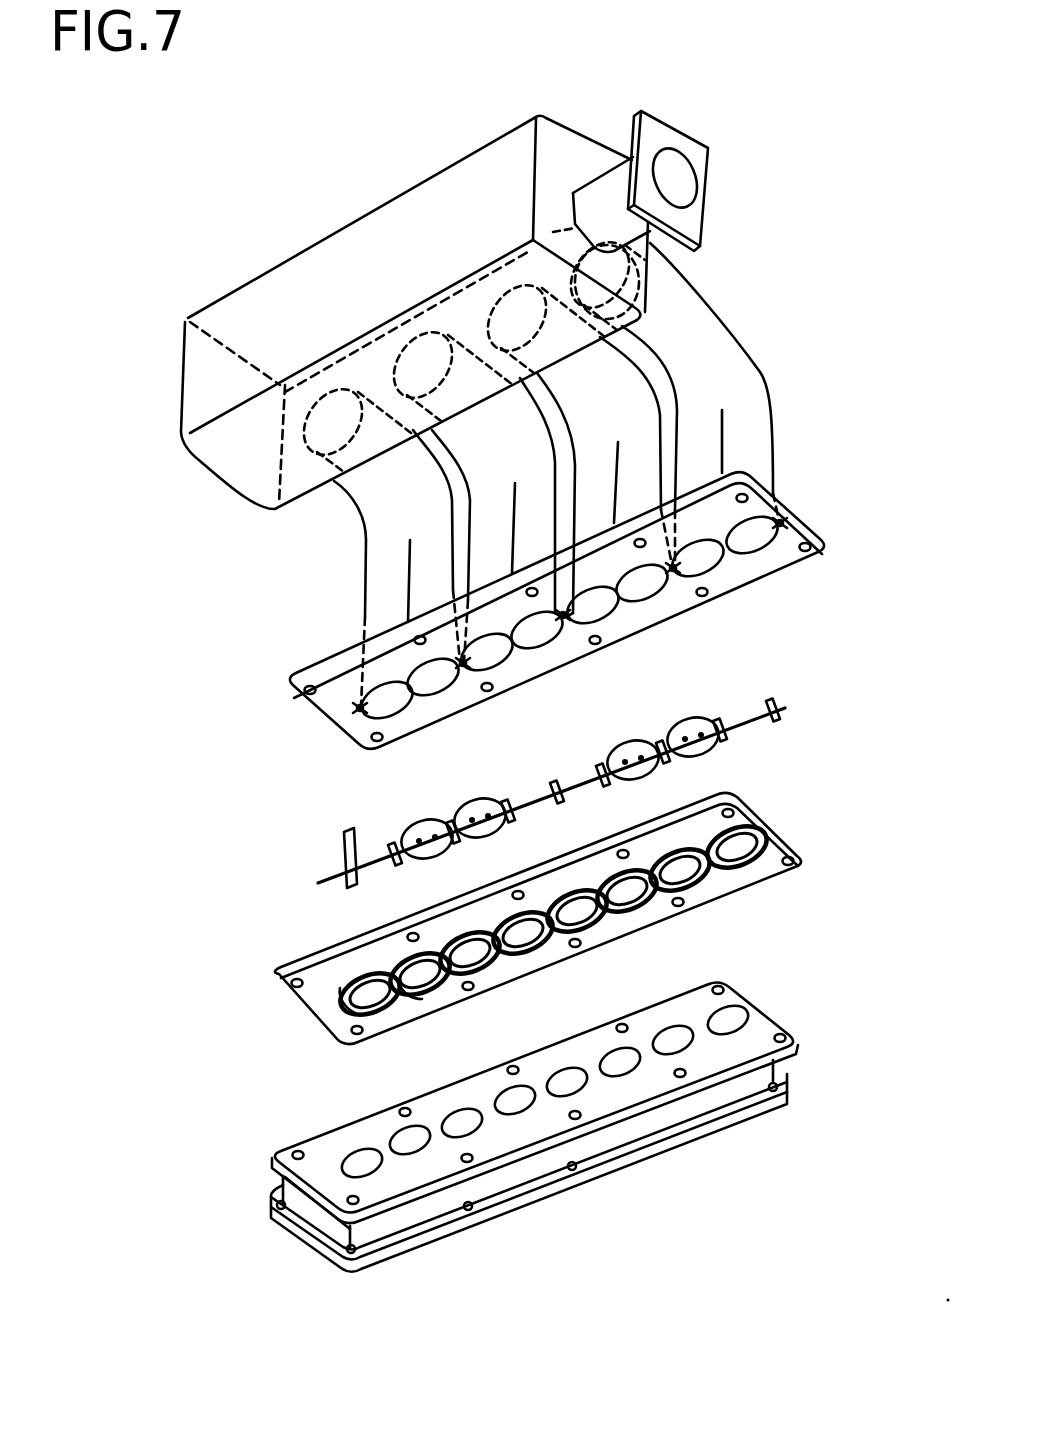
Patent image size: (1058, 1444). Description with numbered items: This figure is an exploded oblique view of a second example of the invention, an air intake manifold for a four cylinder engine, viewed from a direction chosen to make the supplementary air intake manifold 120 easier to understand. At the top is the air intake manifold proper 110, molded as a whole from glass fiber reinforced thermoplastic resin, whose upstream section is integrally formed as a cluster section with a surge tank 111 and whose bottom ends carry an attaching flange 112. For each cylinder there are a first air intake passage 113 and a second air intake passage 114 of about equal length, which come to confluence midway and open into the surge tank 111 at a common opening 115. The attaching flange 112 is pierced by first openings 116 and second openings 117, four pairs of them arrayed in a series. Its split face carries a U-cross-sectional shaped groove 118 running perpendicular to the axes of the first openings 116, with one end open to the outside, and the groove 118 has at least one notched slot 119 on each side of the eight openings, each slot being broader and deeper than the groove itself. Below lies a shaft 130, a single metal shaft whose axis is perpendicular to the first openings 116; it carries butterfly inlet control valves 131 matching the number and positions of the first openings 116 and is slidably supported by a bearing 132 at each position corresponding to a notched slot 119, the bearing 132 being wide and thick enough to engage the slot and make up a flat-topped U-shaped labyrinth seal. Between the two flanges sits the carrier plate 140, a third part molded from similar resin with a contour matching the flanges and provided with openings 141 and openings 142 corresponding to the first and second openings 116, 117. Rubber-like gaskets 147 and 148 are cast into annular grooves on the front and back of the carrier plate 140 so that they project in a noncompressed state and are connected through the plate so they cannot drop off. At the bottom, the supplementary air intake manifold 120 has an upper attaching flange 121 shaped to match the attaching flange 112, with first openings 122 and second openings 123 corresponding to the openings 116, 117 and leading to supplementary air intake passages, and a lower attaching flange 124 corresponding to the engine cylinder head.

The air intake manifold proper 110 is at (523, 408).
The surge tank 111 is at (352, 228).
The attaching flange 112 is at (553, 619).
The first air intake passage 113 is at (703, 437).
The second air intake passage 114 is at (743, 445).
The common opening 115 is at (500, 300).
The first openings 116 is at (667, 582).
The second openings 117 is at (763, 543).
The U-cross-sectional shaped groove 118 is at (357, 710).
The notched slot 119 is at (568, 618).
The supplementary air intake manifold 120 is at (564, 1127).
The attaching flange 121 is at (317, 1143).
The first openings 122 is at (740, 1020).
The second openings 123 is at (680, 1047).
The attaching flange 124 is at (283, 1226).
The shaft 130 is at (595, 773).
The butterfly inlet control valves 131 is at (707, 747).
The bearing 132 is at (780, 703).
The carrier plate 140 is at (582, 929).
The openings 141 is at (690, 895).
The openings 142 is at (753, 865).
The gasket 147 is at (420, 993).
The gasket 148 is at (347, 995).